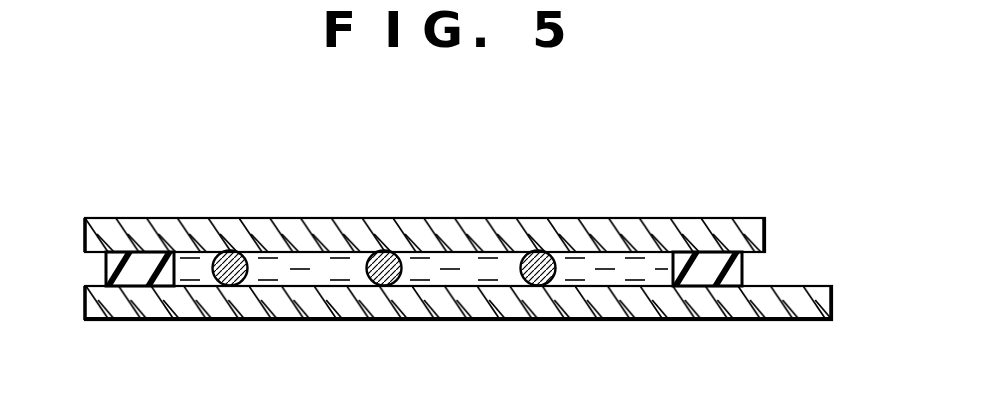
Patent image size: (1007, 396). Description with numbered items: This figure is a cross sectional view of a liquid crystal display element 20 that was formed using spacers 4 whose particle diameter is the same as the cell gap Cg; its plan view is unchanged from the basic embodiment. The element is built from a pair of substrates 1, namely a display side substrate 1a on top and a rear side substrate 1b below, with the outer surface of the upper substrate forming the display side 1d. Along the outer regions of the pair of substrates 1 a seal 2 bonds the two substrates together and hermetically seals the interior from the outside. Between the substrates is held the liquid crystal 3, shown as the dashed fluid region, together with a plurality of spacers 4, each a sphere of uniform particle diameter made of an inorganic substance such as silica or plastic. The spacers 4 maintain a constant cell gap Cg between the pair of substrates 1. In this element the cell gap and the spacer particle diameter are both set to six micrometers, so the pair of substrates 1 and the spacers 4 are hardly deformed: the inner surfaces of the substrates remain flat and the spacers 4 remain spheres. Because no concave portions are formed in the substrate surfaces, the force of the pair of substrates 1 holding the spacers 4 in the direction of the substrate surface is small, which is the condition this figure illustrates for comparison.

The liquid crystal display element 20 is at (693, 163).
The pair of substrates 1 is at (886, 219).
The display side substrate 1a is at (765, 233).
The rear side substrate 1b is at (832, 301).
The display side 1d is at (459, 218).
The cell gap Cg is at (76, 253).
The seal 2 is at (146, 278).
The liquid crystal 3 is at (301, 282).
The spacers 4 is at (530, 285).